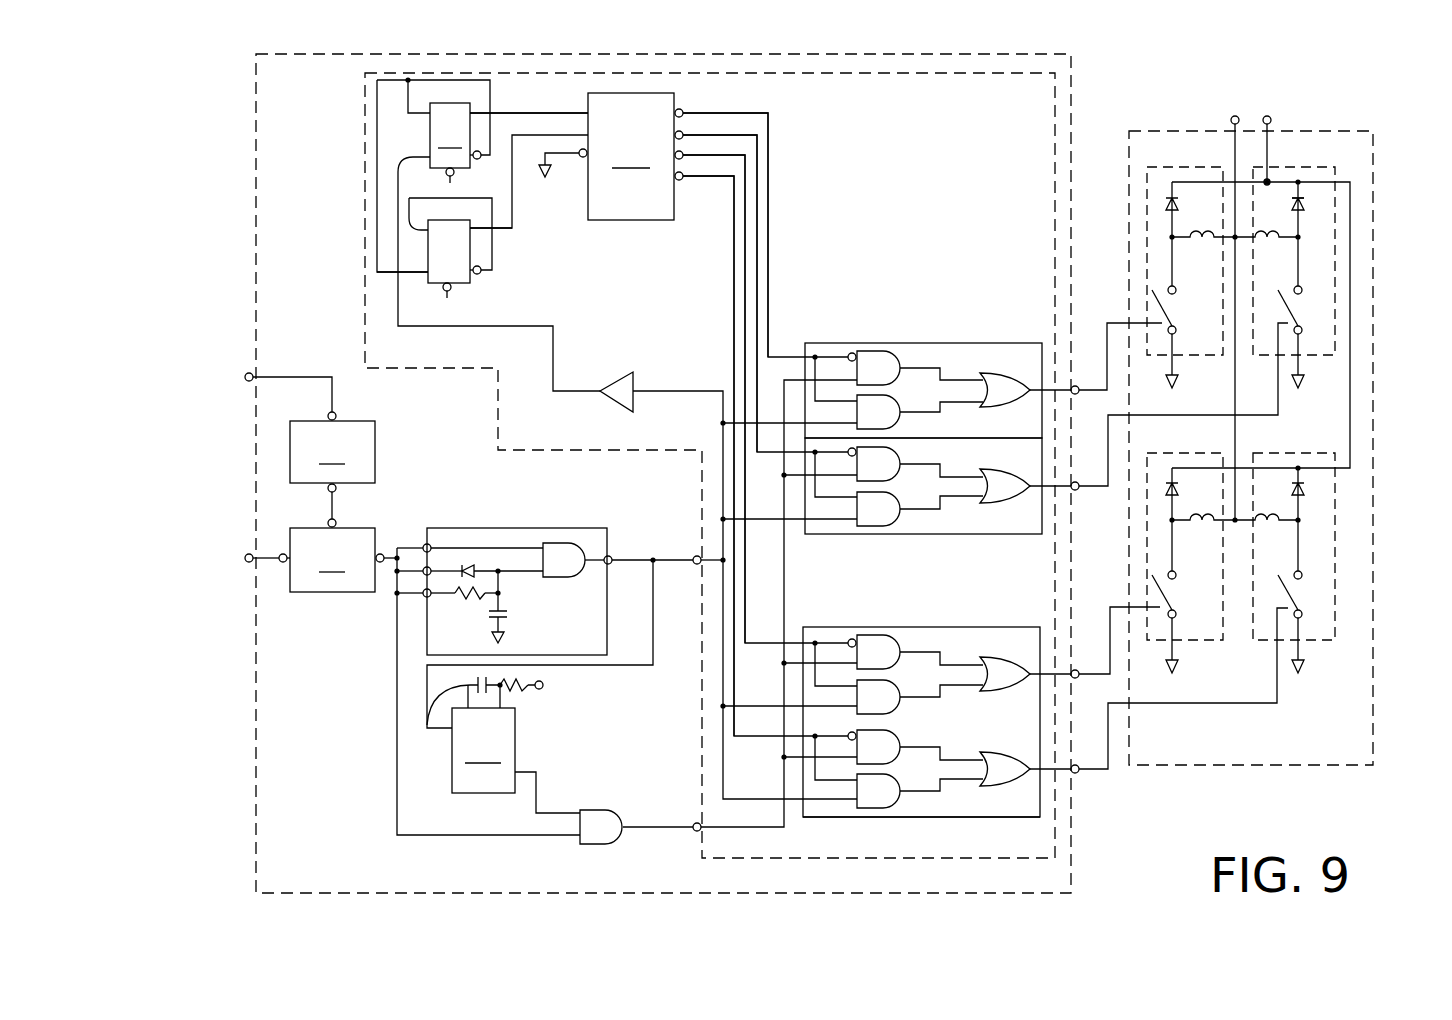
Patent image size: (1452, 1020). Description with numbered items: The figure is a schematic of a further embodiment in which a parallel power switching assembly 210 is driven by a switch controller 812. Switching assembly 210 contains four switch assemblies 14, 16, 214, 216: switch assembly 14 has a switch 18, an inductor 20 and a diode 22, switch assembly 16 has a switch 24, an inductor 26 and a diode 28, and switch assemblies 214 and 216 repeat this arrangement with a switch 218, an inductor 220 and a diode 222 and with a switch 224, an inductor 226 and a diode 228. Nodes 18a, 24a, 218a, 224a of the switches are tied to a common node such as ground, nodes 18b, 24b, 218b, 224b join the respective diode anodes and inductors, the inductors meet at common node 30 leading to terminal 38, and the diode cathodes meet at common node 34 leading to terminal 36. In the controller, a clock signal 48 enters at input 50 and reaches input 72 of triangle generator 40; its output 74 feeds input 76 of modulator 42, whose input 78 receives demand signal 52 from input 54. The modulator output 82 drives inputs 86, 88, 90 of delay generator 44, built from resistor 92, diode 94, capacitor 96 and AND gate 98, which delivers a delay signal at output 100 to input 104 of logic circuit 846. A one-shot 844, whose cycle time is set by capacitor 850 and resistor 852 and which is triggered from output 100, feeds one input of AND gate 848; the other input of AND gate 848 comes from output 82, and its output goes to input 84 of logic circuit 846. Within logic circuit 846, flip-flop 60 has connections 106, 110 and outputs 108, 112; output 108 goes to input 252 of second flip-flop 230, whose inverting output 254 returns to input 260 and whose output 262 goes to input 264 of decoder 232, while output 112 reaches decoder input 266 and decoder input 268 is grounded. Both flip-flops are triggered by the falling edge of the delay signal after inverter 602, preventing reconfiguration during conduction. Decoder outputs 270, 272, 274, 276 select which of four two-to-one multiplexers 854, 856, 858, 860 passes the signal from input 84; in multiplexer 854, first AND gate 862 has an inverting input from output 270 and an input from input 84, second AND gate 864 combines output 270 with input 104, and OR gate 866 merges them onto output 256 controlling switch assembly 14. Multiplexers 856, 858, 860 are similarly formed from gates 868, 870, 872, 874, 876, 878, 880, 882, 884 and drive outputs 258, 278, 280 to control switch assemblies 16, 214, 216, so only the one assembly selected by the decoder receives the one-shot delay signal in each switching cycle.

The switch assembly 14 is at (1142, 215).
The switch assembly 16 is at (1337, 200).
The switch 18 is at (1170, 309).
The node of switch 18 18a is at (1175, 340).
The node of switch 18 18b is at (1170, 287).
The inductor 20 is at (1203, 253).
The diode 22 is at (1179, 203).
The switch 24 is at (1294, 313).
The node of switch 24 24a is at (1302, 330).
The node of switch 24 24b is at (1302, 288).
The inductor 26 is at (1266, 253).
The diode 28 is at (1306, 205).
The common node 30 is at (1236, 235).
The common node 34 is at (1268, 180).
The terminal 36 is at (1267, 116).
The terminal 38 is at (1235, 116).
The triangle generator 40 is at (332, 452).
The modulator 42 is at (332, 560).
The delay generator 44 is at (525, 528).
The clock signal 48 is at (193, 385).
The input of switch controller 50 is at (247, 373).
The demand signal 52 is at (188, 574).
The input of switch controller 54 is at (247, 553).
The flip-flop 60 is at (450, 143).
The input of triangle generator 72 is at (336, 414).
The output of triangle generator 74 is at (336, 492).
The input of modulator 76 is at (336, 520).
The input of modulator 78 is at (283, 562).
The output of modulator 82 is at (385, 553).
The input of logic circuit 84 is at (695, 822).
The input of delay generator 86 is at (427, 544).
The input of delay generator 88 is at (423, 572).
The input of delay generator 90 is at (423, 596).
The resistor 92 is at (465, 598).
The diode 94 is at (470, 565).
The capacitor 96 is at (508, 618).
The AND gate 98 is at (562, 567).
The output of delay generator 100 is at (609, 553).
The input of logic circuit 104 is at (697, 553).
The input 106 is at (402, 166).
The output of flip-flop 60 108 is at (479, 159).
The input 110 is at (410, 116).
The output of flip-flop 60 112 is at (482, 113).
The parallel power switching assembly 210 is at (1343, 128).
The switch assembly 214 is at (1147, 517).
The switch assembly 216 is at (1373, 535).
The switch 218 is at (1170, 605).
The node of switch 218 218a is at (1175, 628).
The node of switch 218 218b is at (1170, 572).
The inductor 220 is at (1203, 537).
The diode 222 is at (1178, 488).
The switch 224 is at (1294, 599).
The node of switch 224 224a is at (1302, 616).
The node of switch 224 224b is at (1302, 573).
The inductor 226 is at (1262, 517).
The diode 228 is at (1306, 490).
The second flip-flop 230 is at (438, 248).
The decoder 232 is at (631, 156).
The input of flip-flop 230 252 is at (409, 272).
The inverting output of flip-flop 230 254 is at (482, 272).
The logic circuit output 256 is at (1076, 386).
The output 258 is at (1077, 482).
The input 260 is at (409, 226).
The output of flip-flop 230 262 is at (482, 230).
The decoder input 264 is at (540, 185).
The decoder input 266 is at (560, 112).
The decoder input 268 is at (561, 158).
The decoder output 270 is at (707, 113).
The decoder output 272 is at (740, 135).
The decoder output 274 is at (735, 155).
The decoder output 276 is at (717, 180).
The output 278 is at (1077, 670).
The output 280 is at (1077, 765).
The inverter 602 is at (622, 385).
The switch controller 812 is at (1073, 84).
The one-shot 844 is at (483, 750).
The logic circuit 846 is at (1071, 122).
The AND gate 848 is at (593, 822).
The capacitor 850 is at (427, 722).
The resistor 852 is at (522, 690).
The multiplexer 854 is at (943, 343).
The multiplexer 856 is at (981, 522).
The multiplexer 858 is at (930, 627).
The multiplexer 860 is at (958, 797).
The first AND gate 862 is at (870, 358).
The second AND gate 864 is at (888, 418).
The OR gate 866 is at (998, 375).
The AND gate 868 is at (881, 463).
The AND gate 870 is at (882, 512).
The OR gate 872 is at (1010, 485).
The AND gate 874 is at (868, 643).
The AND gate 876 is at (882, 690).
The OR gate 878 is at (1000, 660).
The AND gate 880 is at (883, 745).
The AND gate 882 is at (882, 787).
The OR gate 884 is at (1000, 758).